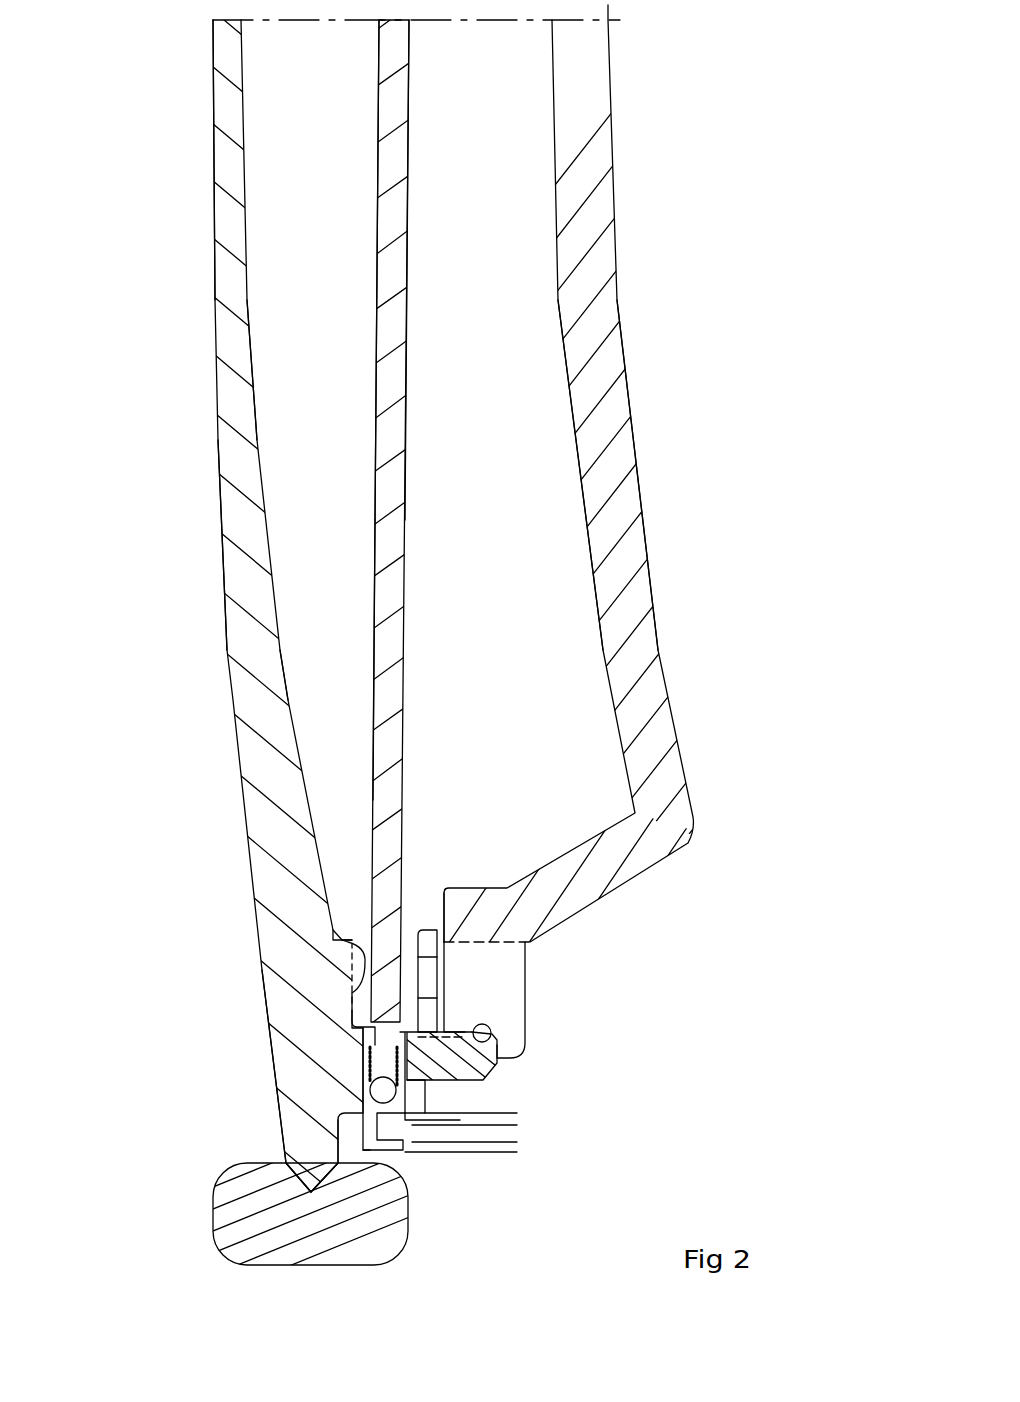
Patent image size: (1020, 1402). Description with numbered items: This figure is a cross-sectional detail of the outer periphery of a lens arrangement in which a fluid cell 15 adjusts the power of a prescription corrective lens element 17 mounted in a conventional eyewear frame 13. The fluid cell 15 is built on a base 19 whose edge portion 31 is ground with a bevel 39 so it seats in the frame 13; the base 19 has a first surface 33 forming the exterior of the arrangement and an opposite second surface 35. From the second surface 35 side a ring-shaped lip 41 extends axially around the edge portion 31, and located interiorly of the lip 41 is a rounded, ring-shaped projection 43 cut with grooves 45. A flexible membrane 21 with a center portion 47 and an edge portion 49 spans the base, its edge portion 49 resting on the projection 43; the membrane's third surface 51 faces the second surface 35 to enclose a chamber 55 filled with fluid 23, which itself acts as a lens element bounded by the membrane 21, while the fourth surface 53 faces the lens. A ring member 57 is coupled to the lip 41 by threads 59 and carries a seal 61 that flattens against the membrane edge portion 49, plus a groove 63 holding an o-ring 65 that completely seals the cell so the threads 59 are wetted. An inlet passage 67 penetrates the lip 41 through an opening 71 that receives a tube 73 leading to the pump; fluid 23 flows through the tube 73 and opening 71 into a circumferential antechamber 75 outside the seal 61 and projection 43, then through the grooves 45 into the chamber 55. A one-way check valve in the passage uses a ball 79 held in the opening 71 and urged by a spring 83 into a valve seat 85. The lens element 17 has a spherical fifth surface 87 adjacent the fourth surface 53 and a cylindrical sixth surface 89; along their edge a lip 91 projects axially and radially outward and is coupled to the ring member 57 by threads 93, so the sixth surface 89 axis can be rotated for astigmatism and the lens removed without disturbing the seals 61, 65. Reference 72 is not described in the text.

The frame 13 is at (232, 1211).
The fluid cell 15 is at (285, 243).
The corrective lens element 17 is at (643, 693).
The base 19 is at (223, 537).
The membrane 21 is at (395, 700).
The fluid 23 is at (323, 564).
The edge portion 31 is at (310, 1145).
The first surface 33 is at (233, 657).
The second surface 35 is at (287, 687).
The bevel 39 is at (311, 1192).
The lip 41 is at (483, 1062).
The projection 43 is at (358, 978).
The grooves 45 is at (355, 977).
The center portion 47 is at (387, 611).
The edge portion 49 is at (331, 928).
The third surface 51 is at (373, 560).
The fourth surface 53 is at (403, 567).
The chamber 55 is at (310, 617).
The ring member 57 is at (497, 976).
The threads 59 is at (446, 1030).
The seal 61 is at (386, 963).
The groove 63 is at (491, 1030).
The o-ring 65 is at (491, 1038).
The inlet passage 67 is at (407, 1137).
The opening 71 is at (373, 1063).
The fin 72 is at (505, 1152).
The tube 73 is at (517, 1128).
The antechamber 75 is at (365, 1048).
The ball 79 is at (400, 1074).
The spring 83 is at (432, 1042).
The valve seat 85 is at (375, 1088).
The fifth surface 87 is at (590, 580).
The sixth surface 89 is at (645, 530).
The lip 91 is at (597, 870).
The threads 93 is at (492, 940).